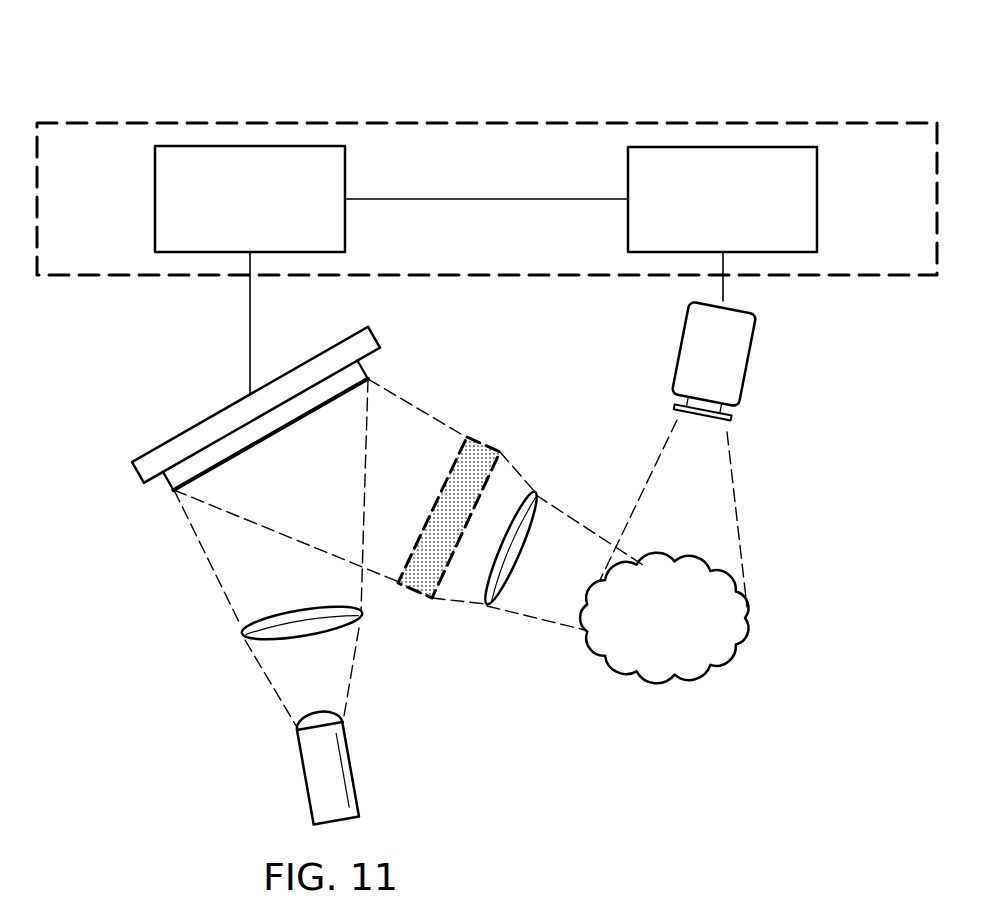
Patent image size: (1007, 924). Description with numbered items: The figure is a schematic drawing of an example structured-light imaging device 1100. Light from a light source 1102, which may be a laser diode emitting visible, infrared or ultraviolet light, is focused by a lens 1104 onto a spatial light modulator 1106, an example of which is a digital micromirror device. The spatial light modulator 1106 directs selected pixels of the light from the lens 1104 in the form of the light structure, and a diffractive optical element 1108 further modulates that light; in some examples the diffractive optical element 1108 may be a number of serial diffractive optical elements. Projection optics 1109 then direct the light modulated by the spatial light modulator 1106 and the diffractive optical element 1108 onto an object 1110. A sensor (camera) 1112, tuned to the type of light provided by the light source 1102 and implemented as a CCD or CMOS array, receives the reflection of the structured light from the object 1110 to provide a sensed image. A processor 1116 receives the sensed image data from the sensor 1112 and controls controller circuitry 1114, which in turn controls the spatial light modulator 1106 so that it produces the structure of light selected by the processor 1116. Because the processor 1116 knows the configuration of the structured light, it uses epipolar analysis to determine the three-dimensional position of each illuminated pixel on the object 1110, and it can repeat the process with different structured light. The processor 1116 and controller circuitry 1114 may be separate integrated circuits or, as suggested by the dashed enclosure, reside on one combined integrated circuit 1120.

The structured-light imaging device 1100 is at (194, 74).
The light source 1102 is at (300, 782).
The lens 1104 is at (241, 632).
The spatial light modulator 1106 is at (221, 411).
The diffractive optical element 1108 is at (476, 436).
The projection optics 1109 is at (486, 606).
The object 1110 is at (695, 634).
The sensor (camera) 1112 is at (749, 363).
The controller circuitry 1114 is at (155, 188).
The processor 1116 is at (818, 188).
The combined integrated circuit 1120 is at (534, 118).